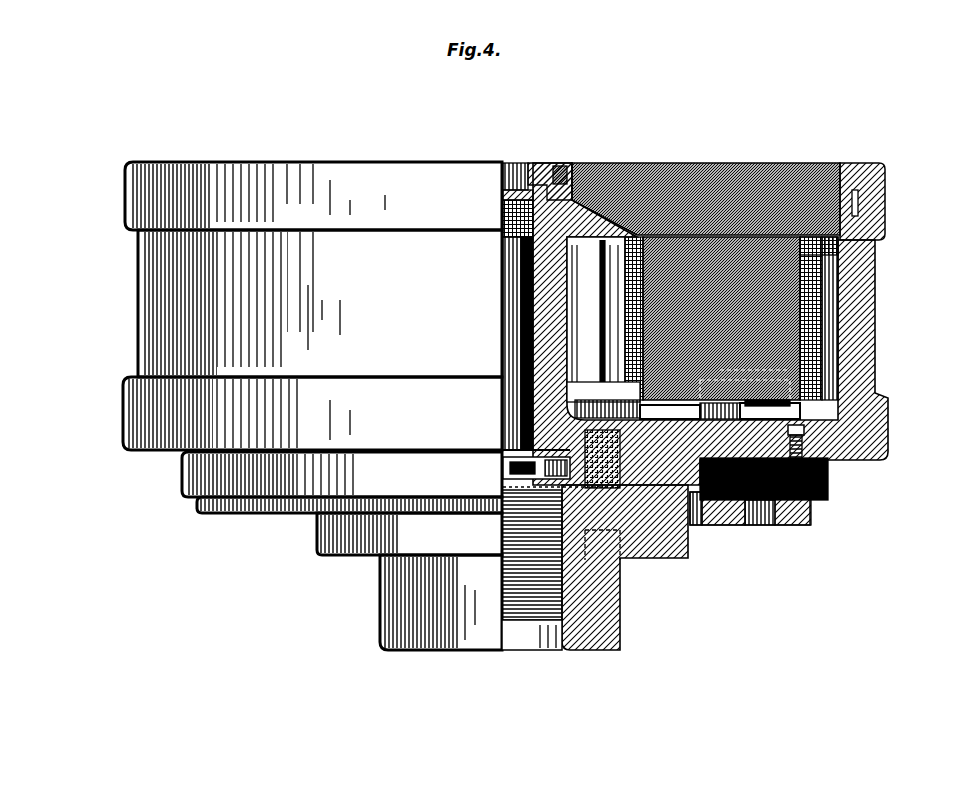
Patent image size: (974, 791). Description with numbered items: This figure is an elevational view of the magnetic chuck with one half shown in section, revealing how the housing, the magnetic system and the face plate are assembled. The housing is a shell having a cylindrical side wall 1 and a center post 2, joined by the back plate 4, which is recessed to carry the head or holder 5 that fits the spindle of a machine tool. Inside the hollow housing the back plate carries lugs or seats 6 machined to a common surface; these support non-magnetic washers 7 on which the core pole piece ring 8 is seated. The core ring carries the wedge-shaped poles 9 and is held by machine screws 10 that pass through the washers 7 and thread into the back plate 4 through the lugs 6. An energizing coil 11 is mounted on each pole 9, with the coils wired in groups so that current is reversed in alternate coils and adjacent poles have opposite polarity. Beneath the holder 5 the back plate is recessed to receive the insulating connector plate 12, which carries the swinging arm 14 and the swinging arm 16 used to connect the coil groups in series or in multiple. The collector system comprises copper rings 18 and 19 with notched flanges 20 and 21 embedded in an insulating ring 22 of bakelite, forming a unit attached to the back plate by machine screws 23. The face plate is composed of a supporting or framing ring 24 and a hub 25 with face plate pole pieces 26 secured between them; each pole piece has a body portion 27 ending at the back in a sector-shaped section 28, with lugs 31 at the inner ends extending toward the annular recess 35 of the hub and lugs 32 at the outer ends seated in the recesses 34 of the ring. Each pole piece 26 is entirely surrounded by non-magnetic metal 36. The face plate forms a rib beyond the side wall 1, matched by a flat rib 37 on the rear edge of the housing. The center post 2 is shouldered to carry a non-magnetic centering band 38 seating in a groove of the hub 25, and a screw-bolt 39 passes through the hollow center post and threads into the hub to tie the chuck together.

The cylindrical side wall 1 is at (138, 300).
The center post 2 is at (555, 311).
The back plate 4 is at (618, 412).
The head or holder 5 is at (380, 604).
The lugs or seats 6 is at (685, 412).
The non-magnetic washers 7 is at (748, 412).
The core pole piece ring 8 is at (587, 392).
The poles 9 is at (877, 250).
The machine screws 10 is at (888, 396).
The energizing coils 11 is at (632, 336).
The connector plate 12 is at (503, 456).
The swinging arm 14 is at (502, 507).
The swinging arm 16 is at (505, 480).
The copper ring 18 is at (197, 508).
The copper ring 19 is at (730, 525).
The flange 20 is at (812, 514).
The flange 21 is at (718, 527).
The insulating ring 22 is at (182, 478).
The machine screws 23 is at (805, 438).
The supporting or framing ring 24 is at (125, 185).
The hub 25 is at (541, 163).
The face plate pole pieces 26 is at (760, 152).
The body portion 27 is at (800, 168).
The sector-shaped section 28 is at (705, 165).
The lugs 31 is at (594, 165).
The lugs 32 is at (858, 194).
The recess 34 is at (858, 218).
The annular recess 35 is at (503, 190).
The non-magnetic metal 36 is at (582, 230).
The flat rib 37 is at (123, 407).
The centering band 38 is at (521, 295).
The screw-bolt 39 is at (523, 325).